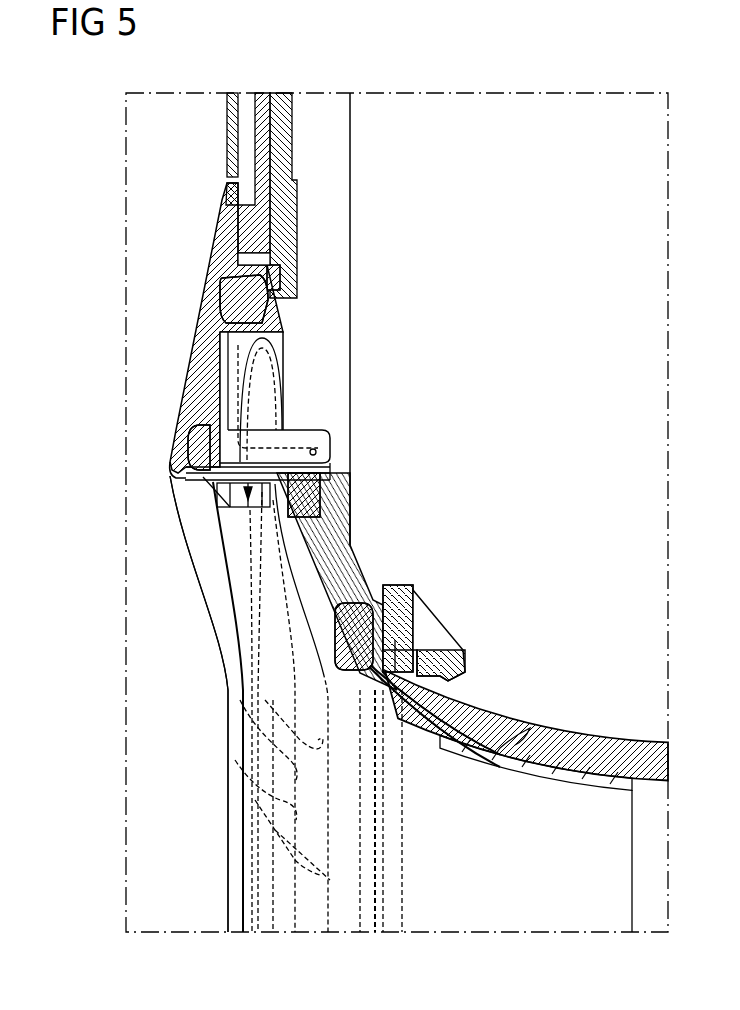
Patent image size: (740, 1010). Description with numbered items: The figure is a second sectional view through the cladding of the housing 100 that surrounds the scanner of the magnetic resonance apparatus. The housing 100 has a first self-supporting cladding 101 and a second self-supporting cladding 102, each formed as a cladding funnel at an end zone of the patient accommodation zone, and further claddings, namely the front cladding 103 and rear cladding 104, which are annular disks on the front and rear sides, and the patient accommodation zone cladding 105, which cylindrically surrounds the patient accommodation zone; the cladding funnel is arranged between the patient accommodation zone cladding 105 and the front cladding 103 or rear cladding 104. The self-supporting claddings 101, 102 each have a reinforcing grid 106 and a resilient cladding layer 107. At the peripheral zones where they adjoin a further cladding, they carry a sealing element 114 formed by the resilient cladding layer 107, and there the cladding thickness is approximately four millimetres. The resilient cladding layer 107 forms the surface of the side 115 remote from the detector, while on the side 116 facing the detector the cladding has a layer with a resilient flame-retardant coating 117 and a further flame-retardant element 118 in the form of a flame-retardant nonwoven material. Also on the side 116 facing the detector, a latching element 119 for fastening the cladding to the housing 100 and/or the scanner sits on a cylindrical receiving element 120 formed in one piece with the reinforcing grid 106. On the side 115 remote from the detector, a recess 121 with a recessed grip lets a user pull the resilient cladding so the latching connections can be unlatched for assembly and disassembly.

The housing 100 is at (112, 778).
The first self-supporting cladding 101 is at (427, 925).
The second self-supporting cladding 102 is at (427, 925).
The front cladding 103 is at (237, 93).
The rear cladding 104 is at (237, 93).
The patient accommodation zone cladding 105 is at (580, 745).
The reinforcing grid 106 is at (240, 300).
The resilient cladding layer 107 is at (200, 352).
The sealing element 114 is at (230, 195).
The side remote from the detector 115 is at (172, 445).
The side facing the detector 116 is at (333, 485).
The flame-retardant coating 117 is at (338, 527).
The further flame-retardant element 118 is at (515, 730).
The latching element 119 is at (410, 586).
The receiving element 120 is at (417, 615).
The recess 121 is at (240, 515).